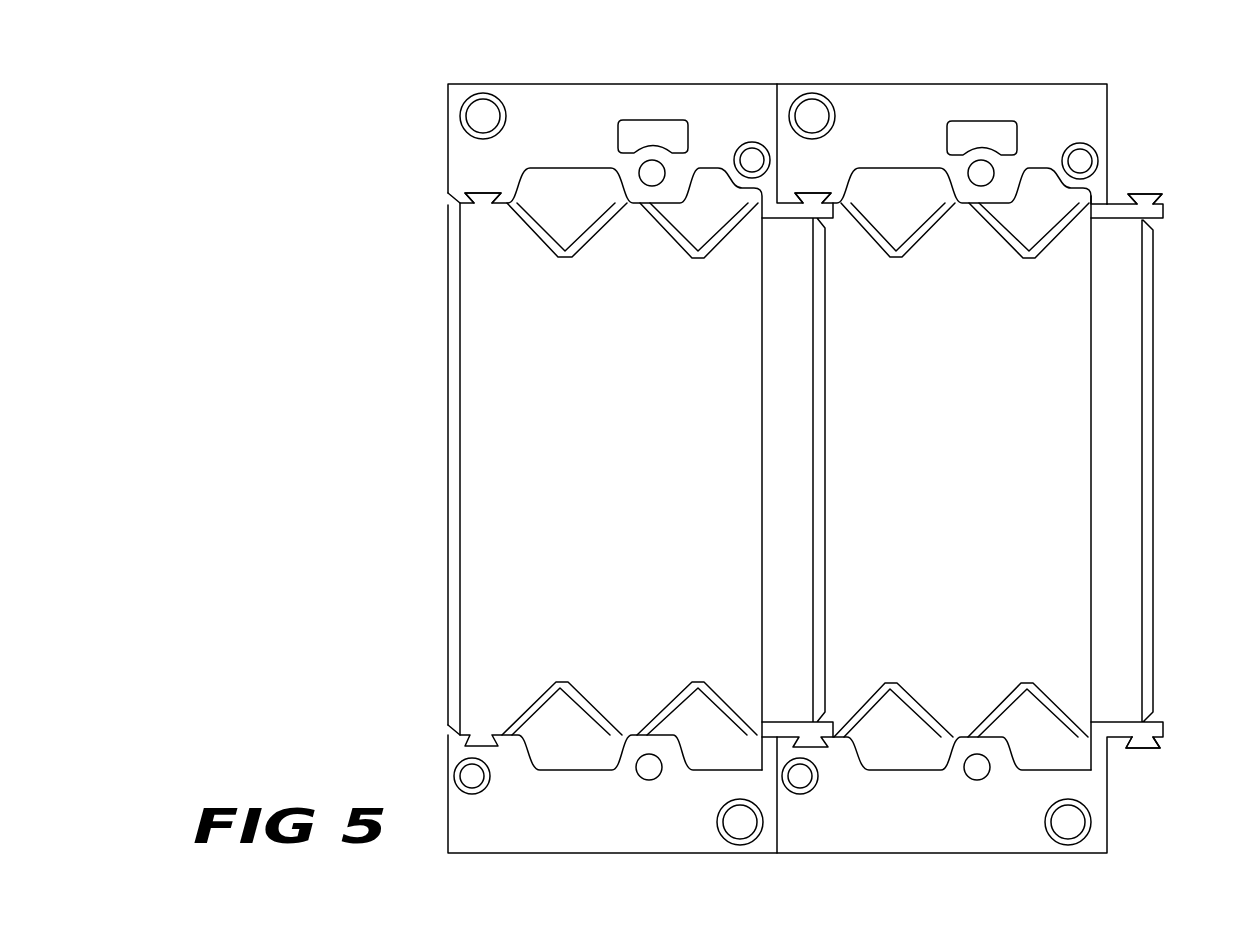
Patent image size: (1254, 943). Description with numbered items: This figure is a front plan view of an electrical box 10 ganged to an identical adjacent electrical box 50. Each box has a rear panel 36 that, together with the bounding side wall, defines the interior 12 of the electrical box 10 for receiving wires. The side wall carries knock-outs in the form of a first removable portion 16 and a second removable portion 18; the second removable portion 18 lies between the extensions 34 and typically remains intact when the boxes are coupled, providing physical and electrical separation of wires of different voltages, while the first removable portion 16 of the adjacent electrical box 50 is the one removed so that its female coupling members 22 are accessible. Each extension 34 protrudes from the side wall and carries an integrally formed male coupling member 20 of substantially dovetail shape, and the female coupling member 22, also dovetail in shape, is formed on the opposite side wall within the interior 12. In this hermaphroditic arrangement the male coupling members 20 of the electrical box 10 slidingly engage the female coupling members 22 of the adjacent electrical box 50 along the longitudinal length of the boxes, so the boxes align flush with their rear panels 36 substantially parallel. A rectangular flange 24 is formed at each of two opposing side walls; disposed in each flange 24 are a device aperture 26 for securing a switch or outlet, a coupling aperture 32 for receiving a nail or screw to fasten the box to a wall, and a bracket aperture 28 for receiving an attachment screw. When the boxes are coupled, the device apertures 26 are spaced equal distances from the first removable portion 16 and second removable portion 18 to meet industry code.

The electrical box 10 is at (376, 67).
The interior 12 is at (542, 322).
The first removable portion 16 is at (453, 427).
The second removable portion 18 is at (827, 437).
The male coupling member 20 is at (828, 193).
The female coupling member 22 is at (490, 193).
The flange 24 is at (570, 137).
The device aperture 26 is at (645, 186).
The bracket aperture 28 is at (751, 142).
The coupling aperture 32 is at (459, 116).
The extension 34 is at (1112, 203).
The rear panel 36 is at (615, 483).
The adjacent electrical box 50 is at (1188, 73).